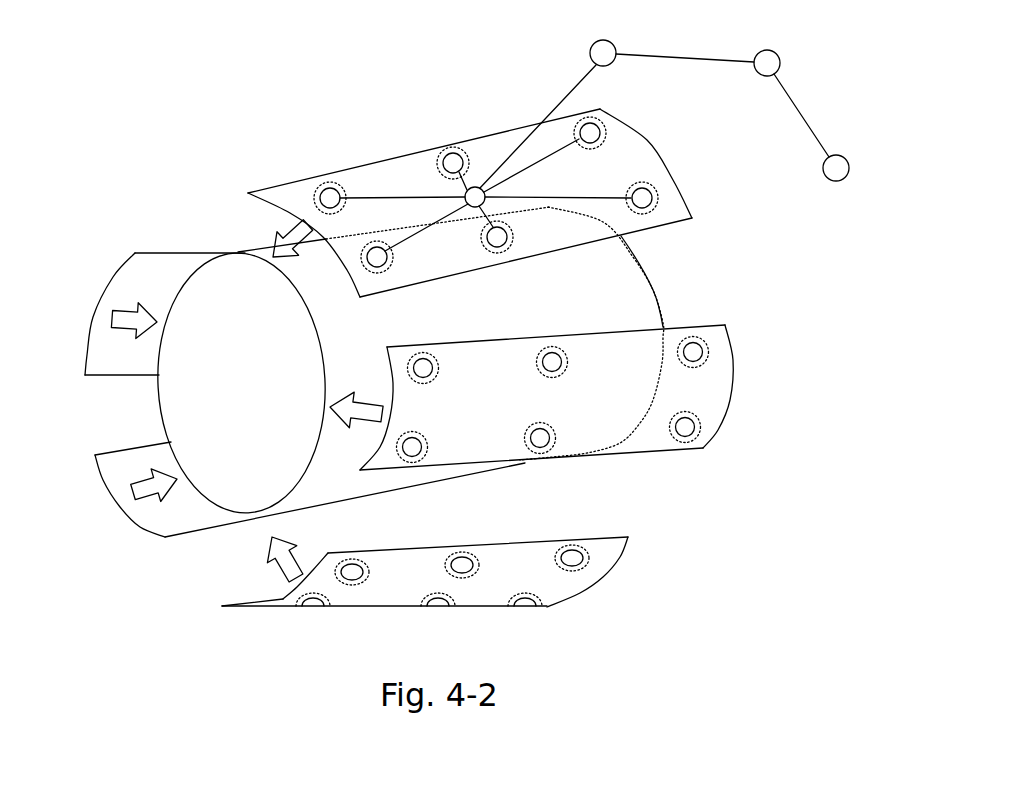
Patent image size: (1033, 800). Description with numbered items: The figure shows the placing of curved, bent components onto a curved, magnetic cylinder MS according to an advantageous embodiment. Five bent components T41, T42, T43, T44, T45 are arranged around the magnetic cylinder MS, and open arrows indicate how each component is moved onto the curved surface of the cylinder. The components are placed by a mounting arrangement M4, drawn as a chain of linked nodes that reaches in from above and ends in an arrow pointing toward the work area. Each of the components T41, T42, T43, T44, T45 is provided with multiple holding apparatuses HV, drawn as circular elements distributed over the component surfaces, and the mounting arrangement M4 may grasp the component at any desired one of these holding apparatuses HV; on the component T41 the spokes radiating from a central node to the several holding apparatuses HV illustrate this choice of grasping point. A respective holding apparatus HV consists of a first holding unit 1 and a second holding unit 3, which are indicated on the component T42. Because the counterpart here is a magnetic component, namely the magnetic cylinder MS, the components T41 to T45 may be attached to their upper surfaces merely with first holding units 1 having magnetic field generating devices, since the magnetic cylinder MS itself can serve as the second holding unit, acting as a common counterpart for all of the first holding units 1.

The first holding unit 1 is at (699, 365).
The second holding unit 3 is at (697, 336).
The holding apparatus HV is at (328, 193).
The mounting arrangement M4 is at (842, 215).
The magnetic cylinder MS is at (227, 480).
The bent component T41 is at (403, 153).
The bent component T42 is at (723, 417).
The bent component T43 is at (558, 585).
The bent component T44 is at (142, 528).
The bent component T45 is at (168, 250).